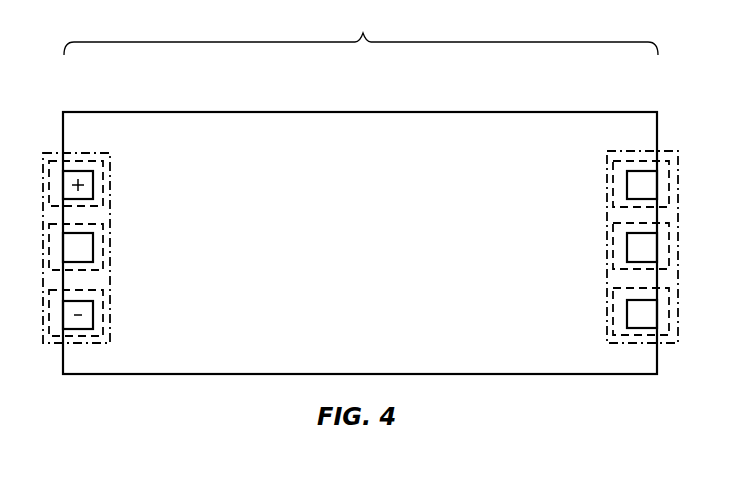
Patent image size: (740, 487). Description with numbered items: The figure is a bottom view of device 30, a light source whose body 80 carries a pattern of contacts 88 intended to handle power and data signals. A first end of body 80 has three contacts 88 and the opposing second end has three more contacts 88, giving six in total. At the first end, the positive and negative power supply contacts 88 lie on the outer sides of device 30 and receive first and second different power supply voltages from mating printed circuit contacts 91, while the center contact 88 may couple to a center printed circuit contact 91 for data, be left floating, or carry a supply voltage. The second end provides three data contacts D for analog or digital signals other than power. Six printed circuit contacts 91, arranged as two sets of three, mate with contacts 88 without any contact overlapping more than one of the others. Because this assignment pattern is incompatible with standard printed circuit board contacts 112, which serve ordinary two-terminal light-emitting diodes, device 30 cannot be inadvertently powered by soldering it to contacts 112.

The device 30 is at (361, 35).
The body 80 is at (537, 128).
The printed circuit board contacts 112 is at (70, 152).
The printed circuit contacts 91 is at (104, 177).
The contacts 88 is at (93, 192).